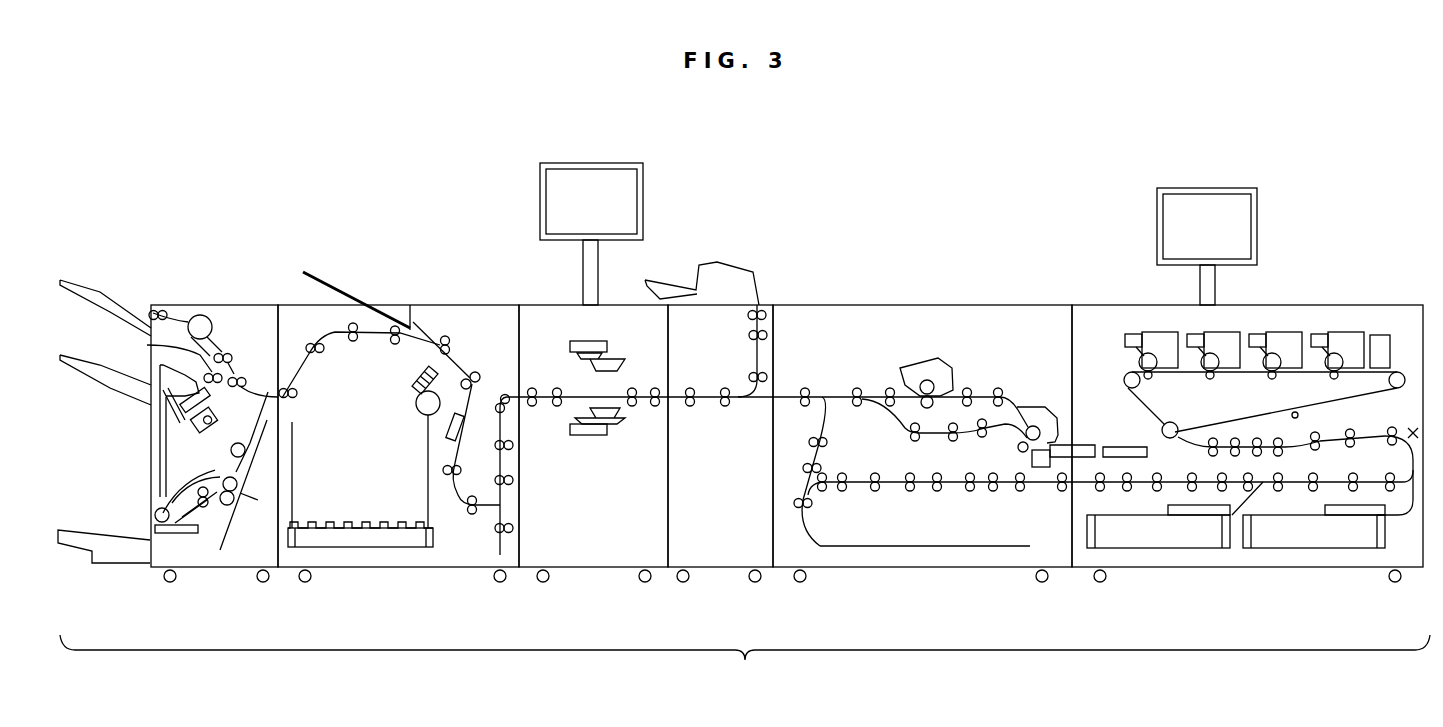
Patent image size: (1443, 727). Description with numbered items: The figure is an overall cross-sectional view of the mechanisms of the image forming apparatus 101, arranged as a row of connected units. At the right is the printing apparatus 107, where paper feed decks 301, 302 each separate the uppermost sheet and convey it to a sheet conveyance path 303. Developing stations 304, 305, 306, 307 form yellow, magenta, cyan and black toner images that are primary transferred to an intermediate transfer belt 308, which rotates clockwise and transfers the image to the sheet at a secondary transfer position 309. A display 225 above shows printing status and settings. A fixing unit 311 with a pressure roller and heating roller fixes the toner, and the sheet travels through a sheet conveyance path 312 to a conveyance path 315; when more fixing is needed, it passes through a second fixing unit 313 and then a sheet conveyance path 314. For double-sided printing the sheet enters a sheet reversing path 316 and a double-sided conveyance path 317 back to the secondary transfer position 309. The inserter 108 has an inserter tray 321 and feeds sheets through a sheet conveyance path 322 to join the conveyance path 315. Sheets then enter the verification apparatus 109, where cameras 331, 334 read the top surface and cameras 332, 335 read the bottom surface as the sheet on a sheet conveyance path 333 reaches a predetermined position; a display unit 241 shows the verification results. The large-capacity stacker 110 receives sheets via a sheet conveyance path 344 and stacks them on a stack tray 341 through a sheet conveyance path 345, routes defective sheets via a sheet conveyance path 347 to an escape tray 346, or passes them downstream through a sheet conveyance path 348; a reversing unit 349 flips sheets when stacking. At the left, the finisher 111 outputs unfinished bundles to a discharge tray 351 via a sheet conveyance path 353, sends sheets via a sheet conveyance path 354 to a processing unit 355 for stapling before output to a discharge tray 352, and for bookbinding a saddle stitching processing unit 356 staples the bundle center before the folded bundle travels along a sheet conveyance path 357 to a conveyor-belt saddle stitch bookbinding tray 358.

The image forming apparatus 101 is at (745, 666).
The printing apparatus 107 is at (925, 570).
The inserter 108 is at (720, 570).
The verification apparatus 109 is at (593, 570).
The large-capacity stacker 110 is at (405, 570).
The finisher 111 is at (223, 570).
The display 225 is at (1205, 186).
The display unit 241 is at (597, 161).
The paper feed deck 301 is at (1190, 568).
The paper feed deck 302 is at (1340, 568).
The sheet conveyance path 303 is at (1372, 433).
The developing station 304 is at (1348, 332).
The developing station 305 is at (1292, 332).
The developing station 306 is at (1233, 332).
The developing station 307 is at (1152, 332).
The intermediate transfer belt 308 is at (1222, 430).
The secondary transfer position 309 is at (1160, 427).
The fixing unit 311 is at (1037, 407).
The sheet conveyance path 312 is at (885, 410).
The second fixing unit 313 is at (918, 360).
The sheet conveyance path 314 is at (877, 395).
The conveyance path 315 is at (792, 393).
The sheet reversing path 316 is at (870, 545).
The double-sided conveyance path 317 is at (1040, 487).
The inserter tray 321 is at (668, 280).
The sheet conveyance path 322 is at (752, 352).
The camera 331 is at (597, 340).
The camera 332 is at (582, 437).
The sheet conveyance path 333 is at (575, 393).
The camera 334 is at (617, 353).
The camera 335 is at (617, 428).
The stack tray 341 is at (325, 516).
The sheet conveyance path 344 is at (450, 497).
The sheet conveyance path 345 is at (440, 370).
The escape tray 346 is at (367, 303).
The sheet conveyance path 347 is at (440, 326).
The sheet conveyance path 348 is at (328, 330).
The reversing unit 349 is at (498, 557).
The discharge tray 351 is at (86, 283).
The discharge tray 352 is at (86, 357).
The sheet conveyance path 353 is at (178, 320).
The sheet conveyance path 354 is at (147, 345).
The processing unit 355 is at (198, 436).
The saddle stitching processing unit 356 is at (240, 495).
The sheet conveyance path 357 is at (175, 535).
The saddle stitch bookbinding tray 358 is at (86, 530).